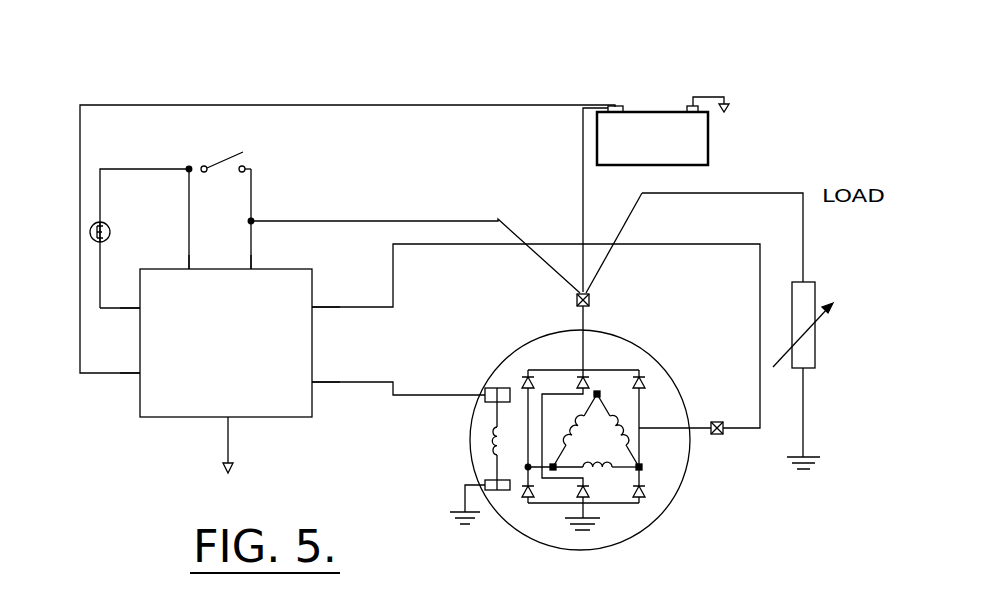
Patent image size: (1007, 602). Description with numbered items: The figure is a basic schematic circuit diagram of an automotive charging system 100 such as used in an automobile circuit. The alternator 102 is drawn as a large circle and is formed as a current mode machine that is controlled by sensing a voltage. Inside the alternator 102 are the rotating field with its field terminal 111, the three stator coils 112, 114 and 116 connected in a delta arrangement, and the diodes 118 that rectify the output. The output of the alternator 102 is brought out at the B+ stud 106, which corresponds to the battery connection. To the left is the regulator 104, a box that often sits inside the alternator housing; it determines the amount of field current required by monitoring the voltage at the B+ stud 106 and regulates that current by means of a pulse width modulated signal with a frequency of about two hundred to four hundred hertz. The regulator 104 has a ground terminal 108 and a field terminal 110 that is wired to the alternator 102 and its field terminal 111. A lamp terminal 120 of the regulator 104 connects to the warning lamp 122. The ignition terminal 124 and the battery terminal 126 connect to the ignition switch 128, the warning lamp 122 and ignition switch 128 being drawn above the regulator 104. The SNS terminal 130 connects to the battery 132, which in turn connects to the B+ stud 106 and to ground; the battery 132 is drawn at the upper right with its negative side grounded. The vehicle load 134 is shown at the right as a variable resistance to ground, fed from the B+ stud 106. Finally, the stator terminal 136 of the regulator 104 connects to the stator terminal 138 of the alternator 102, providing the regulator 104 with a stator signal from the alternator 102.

The charging system 100 is at (500, 68).
The alternator 102 is at (579, 456).
The regulator 104 is at (138, 402).
The B+ stud 106 is at (597, 306).
The ground terminal 108 is at (267, 454).
The field terminal 110 is at (349, 359).
The field terminal 111 is at (493, 442).
The stator coil 112 is at (602, 520).
The stator coil 114 is at (531, 396).
The stator coil 116 is at (645, 396).
The diodes 118 is at (634, 423).
The lamp terminal 120 is at (80, 325).
The warning lamp 122 is at (101, 234).
The ignition terminal 124 is at (216, 249).
The battery terminal 126 is at (277, 249).
The ignition switch 128 is at (263, 150).
The SNS terminal 130 is at (80, 389).
The battery 132 is at (642, 123).
The vehicle load 134 is at (829, 375).
The stator terminal 136 is at (349, 284).
The stator terminal 138 is at (738, 432).